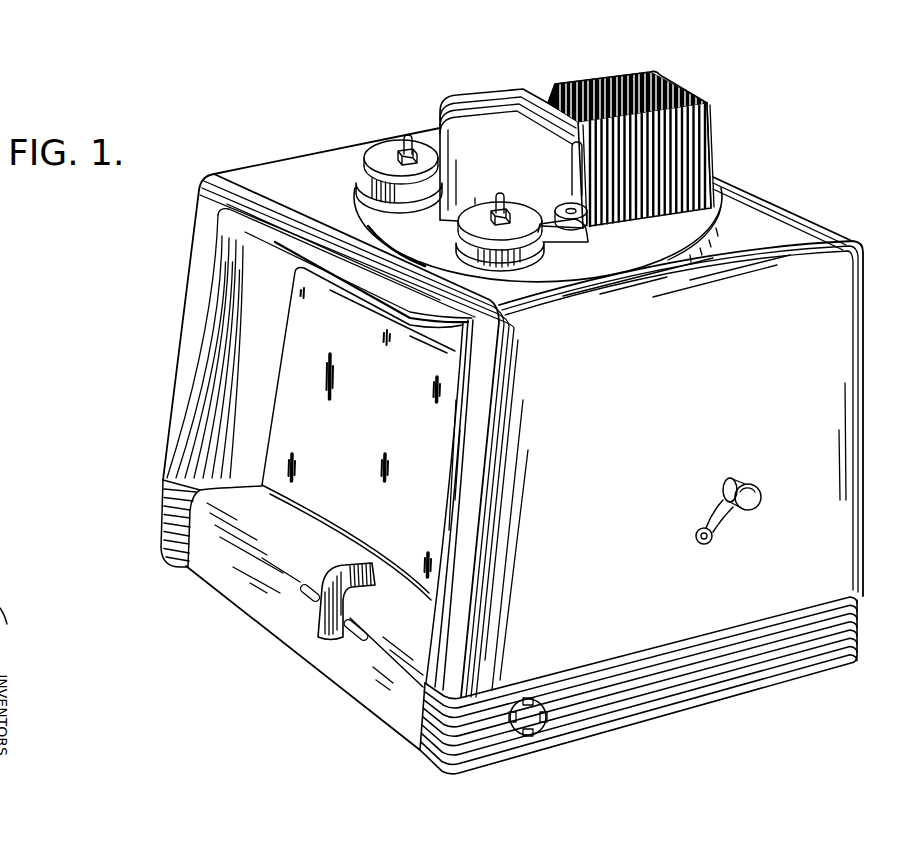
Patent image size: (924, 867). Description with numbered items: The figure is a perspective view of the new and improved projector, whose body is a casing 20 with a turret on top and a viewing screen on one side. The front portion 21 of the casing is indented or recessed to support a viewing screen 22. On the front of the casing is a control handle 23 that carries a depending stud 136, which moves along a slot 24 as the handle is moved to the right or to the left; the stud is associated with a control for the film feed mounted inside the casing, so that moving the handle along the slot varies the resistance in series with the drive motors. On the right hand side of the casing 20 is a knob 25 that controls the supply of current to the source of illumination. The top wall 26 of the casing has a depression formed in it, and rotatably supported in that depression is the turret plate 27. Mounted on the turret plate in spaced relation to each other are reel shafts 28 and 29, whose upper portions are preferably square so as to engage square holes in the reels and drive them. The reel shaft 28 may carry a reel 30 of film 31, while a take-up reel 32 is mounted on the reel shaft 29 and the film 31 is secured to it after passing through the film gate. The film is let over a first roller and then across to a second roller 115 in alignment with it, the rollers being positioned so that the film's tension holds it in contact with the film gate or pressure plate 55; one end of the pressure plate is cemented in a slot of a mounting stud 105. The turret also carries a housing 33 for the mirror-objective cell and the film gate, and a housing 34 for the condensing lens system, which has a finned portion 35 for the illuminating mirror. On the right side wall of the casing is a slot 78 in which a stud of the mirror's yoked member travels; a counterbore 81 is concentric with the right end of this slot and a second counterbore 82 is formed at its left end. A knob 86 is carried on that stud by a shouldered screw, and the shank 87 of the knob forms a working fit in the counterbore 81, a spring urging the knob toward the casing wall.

The casing 20 is at (170, 311).
The front portion 21 is at (205, 428).
The viewing screen 22 is at (323, 503).
The control handle 23 is at (318, 620).
The slot 24 is at (360, 641).
The knob 25 is at (538, 736).
The top wall 26 is at (822, 236).
The turret plate 27 is at (382, 217).
The reel shaft 28 is at (402, 141).
The reel shaft 29 is at (503, 198).
The reel 30 is at (378, 162).
The film 31 is at (553, 243).
The take-up reel 32 is at (464, 223).
The housing 33 is at (465, 110).
The housing 34 is at (684, 86).
The finned portion 35 is at (687, 153).
The film gate 55 is at (573, 198).
The slot 78 is at (714, 508).
The counterbore 81 is at (717, 493).
The second counterbore 82 is at (697, 540).
The knob 86 is at (740, 512).
The shank 87 is at (724, 484).
The mounting stud 105 is at (577, 188).
The roller 115 is at (587, 236).
The depending stud 136 is at (345, 637).